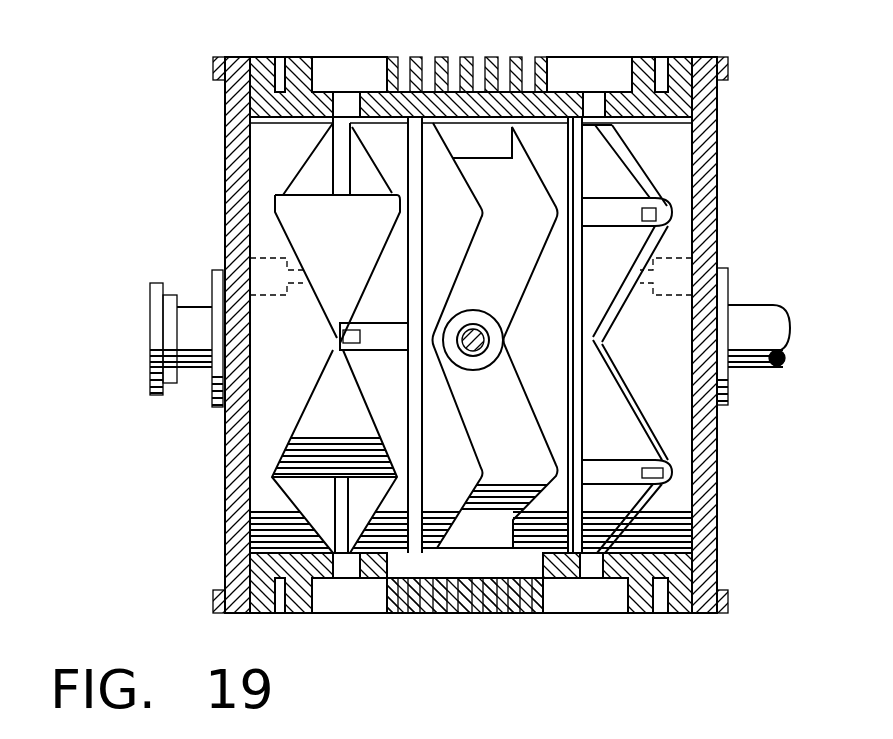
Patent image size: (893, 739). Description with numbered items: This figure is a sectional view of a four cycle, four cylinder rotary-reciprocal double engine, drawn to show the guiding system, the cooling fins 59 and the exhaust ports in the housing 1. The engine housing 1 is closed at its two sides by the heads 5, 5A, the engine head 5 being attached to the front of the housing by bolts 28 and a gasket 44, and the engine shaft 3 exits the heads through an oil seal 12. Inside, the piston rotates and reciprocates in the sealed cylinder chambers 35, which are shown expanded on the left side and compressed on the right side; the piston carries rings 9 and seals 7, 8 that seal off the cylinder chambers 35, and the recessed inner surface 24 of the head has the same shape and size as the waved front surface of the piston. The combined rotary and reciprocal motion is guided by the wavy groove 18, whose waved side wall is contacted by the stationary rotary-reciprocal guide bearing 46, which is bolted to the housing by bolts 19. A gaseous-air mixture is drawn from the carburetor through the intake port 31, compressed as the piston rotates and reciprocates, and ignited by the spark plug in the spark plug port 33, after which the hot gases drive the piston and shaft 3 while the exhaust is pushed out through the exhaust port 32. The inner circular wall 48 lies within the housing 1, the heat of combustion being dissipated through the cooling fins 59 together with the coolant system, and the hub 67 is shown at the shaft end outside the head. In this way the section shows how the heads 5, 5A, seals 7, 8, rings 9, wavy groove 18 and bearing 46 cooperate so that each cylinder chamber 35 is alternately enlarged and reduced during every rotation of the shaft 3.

The engine housing 1 is at (383, 607).
The engine shaft 3 is at (200, 332).
The engine head (side wall) 5 is at (697, 113).
The head 5A is at (240, 178).
The seal 7 is at (613, 485).
The seal 8 is at (340, 340).
The ring 9 is at (532, 615).
The oil seal 12 is at (722, 287).
The wavy groove 18 is at (418, 617).
The bolts 19 is at (487, 340).
The recessed inner surface of the head 24 is at (347, 153).
The bolts 28 is at (208, 602).
The intake port 31 is at (690, 552).
The exhaust port 32 is at (350, 570).
The spark plug port 33 is at (673, 272).
The cylinder chamber 35 is at (748, 460).
The gasket 44 is at (673, 614).
The bearing 46 is at (483, 353).
The inner circular wall 48 is at (337, 425).
The cooling fins 59 is at (483, 610).
The hub 67 is at (160, 347).